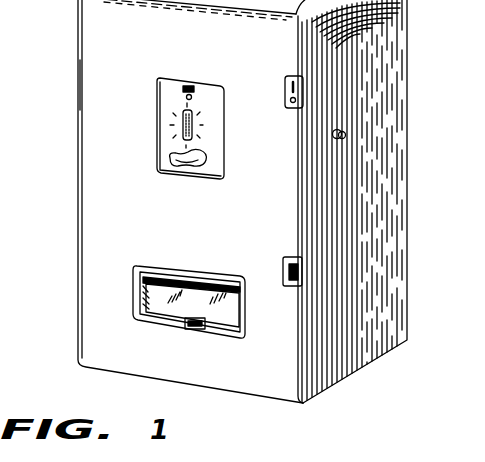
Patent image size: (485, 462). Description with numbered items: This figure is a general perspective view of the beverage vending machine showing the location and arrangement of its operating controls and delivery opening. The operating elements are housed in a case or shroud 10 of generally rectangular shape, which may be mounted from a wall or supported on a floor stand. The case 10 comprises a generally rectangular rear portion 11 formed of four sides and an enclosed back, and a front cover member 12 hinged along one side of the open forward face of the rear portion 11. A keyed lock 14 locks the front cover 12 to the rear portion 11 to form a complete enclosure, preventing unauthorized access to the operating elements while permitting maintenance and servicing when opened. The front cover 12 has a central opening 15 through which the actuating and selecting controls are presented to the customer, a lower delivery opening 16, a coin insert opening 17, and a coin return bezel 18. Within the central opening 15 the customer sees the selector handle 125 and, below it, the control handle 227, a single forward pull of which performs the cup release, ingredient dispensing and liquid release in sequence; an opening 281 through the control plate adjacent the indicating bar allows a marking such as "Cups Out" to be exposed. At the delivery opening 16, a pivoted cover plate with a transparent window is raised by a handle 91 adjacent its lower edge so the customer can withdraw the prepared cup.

The case or shroud 10 is at (180, 48).
The rear portion 11 is at (408, 181).
The front cover member 12 is at (92, 80).
The keyed lock 14 is at (333, 135).
The central opening 15 is at (158, 138).
The delivery opening 16 is at (185, 271).
The coin insert opening 17 is at (285, 86).
The coin return bezel 18 is at (283, 268).
The handle 91 is at (194, 330).
The selector handle 125 is at (197, 124).
The control handle 227 is at (182, 162).
The opening 281 is at (190, 85).